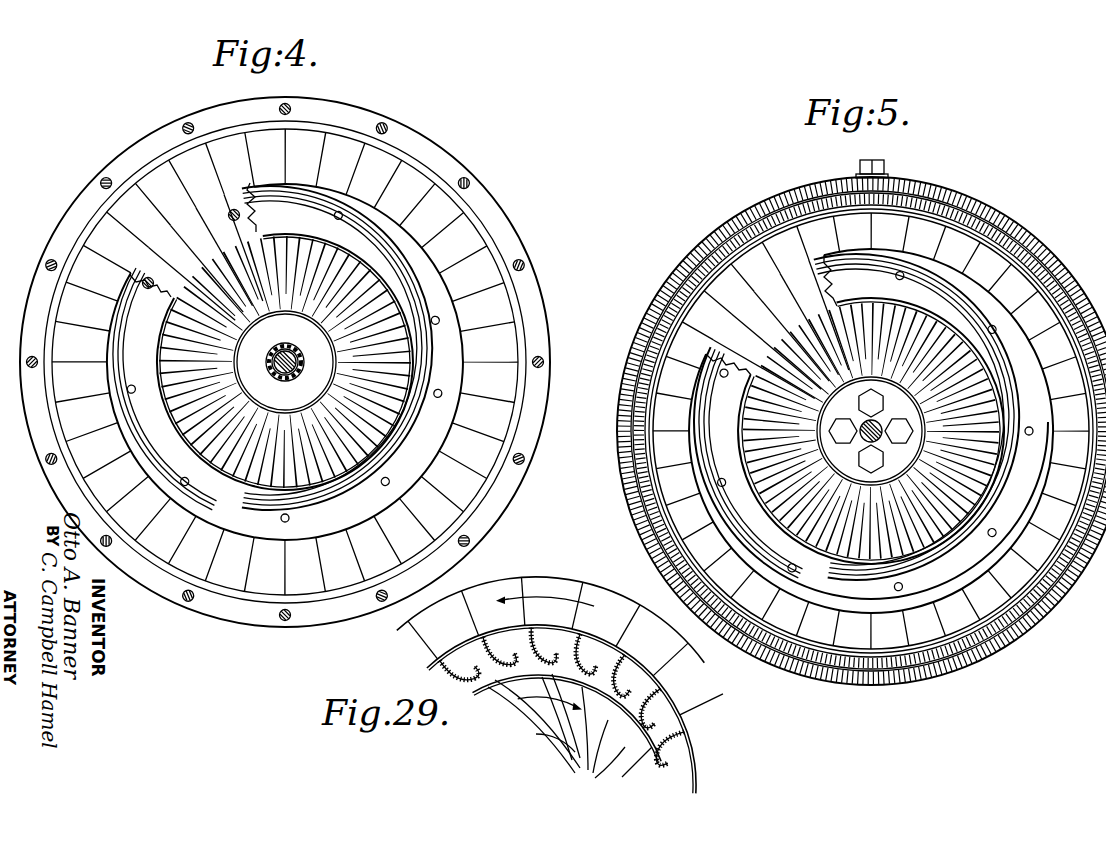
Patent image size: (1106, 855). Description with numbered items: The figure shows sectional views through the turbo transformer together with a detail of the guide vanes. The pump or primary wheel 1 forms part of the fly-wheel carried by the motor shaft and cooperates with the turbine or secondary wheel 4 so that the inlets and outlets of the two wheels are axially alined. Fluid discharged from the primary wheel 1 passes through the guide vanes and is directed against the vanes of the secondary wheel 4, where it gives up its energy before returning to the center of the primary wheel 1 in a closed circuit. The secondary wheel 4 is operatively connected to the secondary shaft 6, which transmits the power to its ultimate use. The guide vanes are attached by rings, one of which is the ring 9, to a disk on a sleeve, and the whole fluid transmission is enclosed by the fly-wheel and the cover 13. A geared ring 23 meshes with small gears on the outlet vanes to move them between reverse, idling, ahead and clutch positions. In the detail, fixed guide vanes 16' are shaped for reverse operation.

In FIG. 4, the pump or primary wheel 1 is at (285, 362).
In FIG. 4, the secondary shaft 6 is at (285, 362).
In FIG. 5, the secondary shaft 6 is at (871, 431).
In FIG. 5, the cover 13 is at (861, 424).
In FIG. 5, the geared ring 23 is at (869, 422).
In FIG. 5, the ring 9 is at (871, 431).
In FIG. 5, the turbine or secondary wheel 4 is at (871, 431).
In FIG. 29, the guide vanes for reverse operation 16' is at (566, 697).